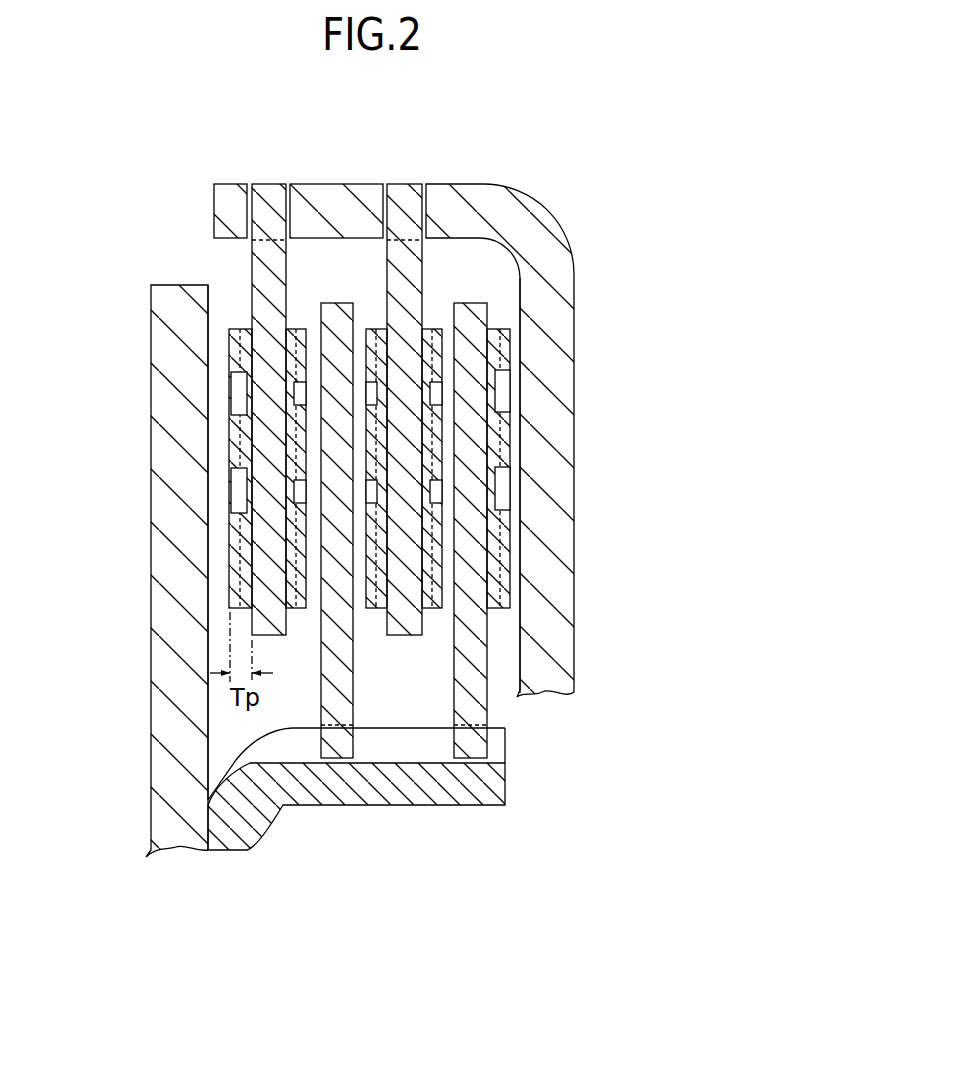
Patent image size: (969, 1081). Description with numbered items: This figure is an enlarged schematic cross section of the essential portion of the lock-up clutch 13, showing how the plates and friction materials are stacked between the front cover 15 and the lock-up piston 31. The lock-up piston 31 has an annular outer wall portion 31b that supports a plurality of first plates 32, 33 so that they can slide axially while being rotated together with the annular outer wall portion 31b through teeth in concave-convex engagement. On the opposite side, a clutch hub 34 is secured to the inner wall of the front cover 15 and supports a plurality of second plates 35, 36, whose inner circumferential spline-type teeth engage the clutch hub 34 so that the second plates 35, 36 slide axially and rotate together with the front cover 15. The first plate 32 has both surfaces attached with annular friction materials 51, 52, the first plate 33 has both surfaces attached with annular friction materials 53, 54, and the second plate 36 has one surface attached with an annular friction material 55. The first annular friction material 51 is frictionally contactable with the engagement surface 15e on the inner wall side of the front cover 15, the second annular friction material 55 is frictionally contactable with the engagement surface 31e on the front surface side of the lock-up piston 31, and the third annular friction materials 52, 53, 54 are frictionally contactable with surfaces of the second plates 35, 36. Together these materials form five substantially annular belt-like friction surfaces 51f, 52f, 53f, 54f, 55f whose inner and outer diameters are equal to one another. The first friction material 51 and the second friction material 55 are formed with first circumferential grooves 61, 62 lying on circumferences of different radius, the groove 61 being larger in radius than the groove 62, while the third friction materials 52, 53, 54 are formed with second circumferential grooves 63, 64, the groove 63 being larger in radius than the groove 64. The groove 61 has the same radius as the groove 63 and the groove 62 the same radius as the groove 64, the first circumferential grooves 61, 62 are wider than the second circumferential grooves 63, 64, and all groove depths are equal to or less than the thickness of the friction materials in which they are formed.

The connector assembly 13 is at (553, 178).
The front cover 15 is at (160, 608).
The engagement surface 15e is at (211, 658).
The lock-up piston 31 is at (552, 606).
The annular outer wall portion 31b is at (345, 197).
The engagement surface 31e is at (518, 370).
The first plate 32 is at (276, 197).
The first plate 33 is at (405, 197).
The clutch hub 34 is at (247, 818).
The second plate 35 is at (340, 743).
The second plate 36 is at (465, 743).
The first annular friction material 51 is at (242, 330).
The friction surface 51f is at (232, 556).
The third annular friction material 52 is at (288, 613).
The friction surface 52f is at (307, 350).
The third annular friction material 53 is at (377, 327).
The friction surface 53f is at (359, 598).
The third annular friction material 54 is at (429, 335).
The friction surface 54f is at (437, 350).
The second annular friction material 55 is at (500, 328).
The friction surface 55f is at (505, 528).
The first circumferential groove 61 is at (240, 386).
The first circumferential groove 62 is at (240, 484).
The second circumferential groove 63 is at (435, 392).
The second circumferential groove 64 is at (432, 485).